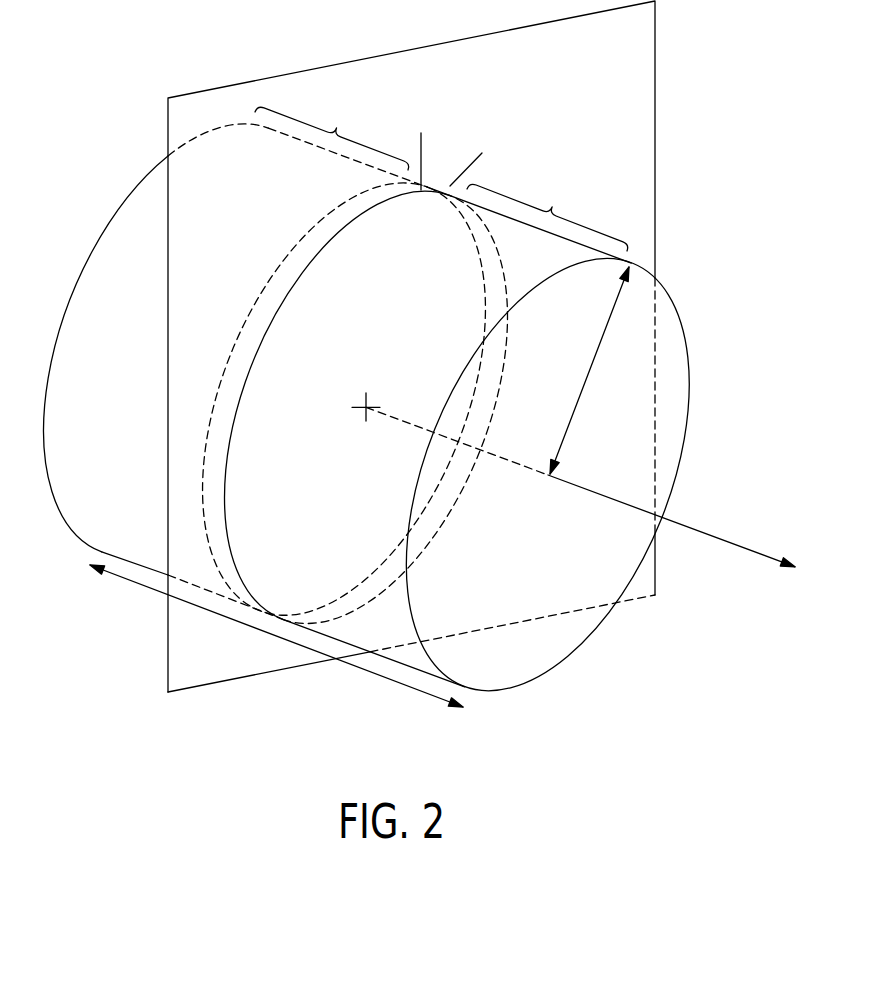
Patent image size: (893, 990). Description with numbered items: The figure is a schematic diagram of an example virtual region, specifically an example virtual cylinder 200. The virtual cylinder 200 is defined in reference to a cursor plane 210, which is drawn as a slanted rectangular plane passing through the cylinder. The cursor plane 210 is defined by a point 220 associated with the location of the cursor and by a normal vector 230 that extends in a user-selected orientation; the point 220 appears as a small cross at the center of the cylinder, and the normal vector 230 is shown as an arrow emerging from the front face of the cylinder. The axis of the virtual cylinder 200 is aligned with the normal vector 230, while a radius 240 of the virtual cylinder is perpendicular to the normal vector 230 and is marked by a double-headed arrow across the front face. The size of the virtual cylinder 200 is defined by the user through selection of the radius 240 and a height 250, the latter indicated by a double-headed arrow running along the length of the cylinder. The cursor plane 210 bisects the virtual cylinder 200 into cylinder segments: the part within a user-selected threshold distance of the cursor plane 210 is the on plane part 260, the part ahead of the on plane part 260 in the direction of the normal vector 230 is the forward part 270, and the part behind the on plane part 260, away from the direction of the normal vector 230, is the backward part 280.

The virtual cylinder 200 is at (681, 328).
The cursor plane 210 is at (614, 78).
The point 220 is at (372, 405).
The normal vector 230 is at (737, 548).
The radius 240 is at (586, 377).
The height 250 is at (240, 623).
The on plane part 260 is at (486, 150).
The forward part 270 is at (547, 211).
The backward part 280 is at (332, 129).